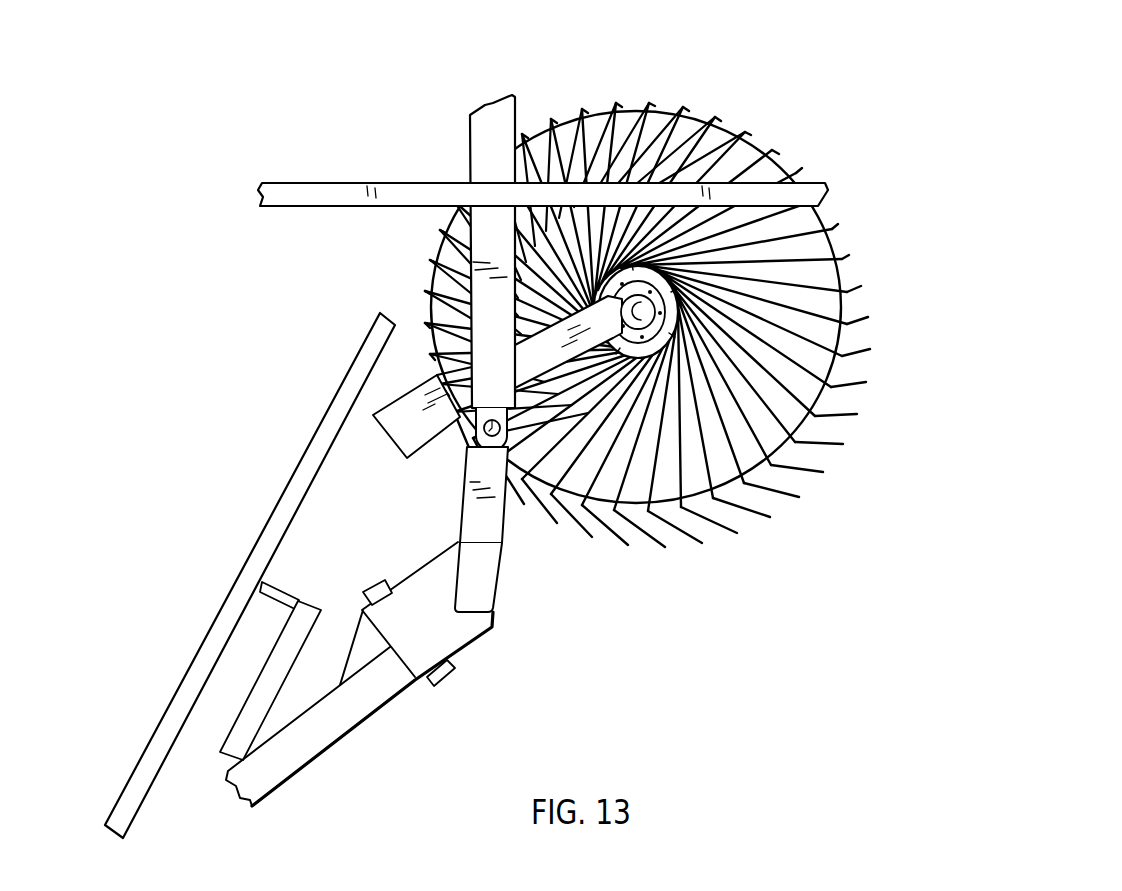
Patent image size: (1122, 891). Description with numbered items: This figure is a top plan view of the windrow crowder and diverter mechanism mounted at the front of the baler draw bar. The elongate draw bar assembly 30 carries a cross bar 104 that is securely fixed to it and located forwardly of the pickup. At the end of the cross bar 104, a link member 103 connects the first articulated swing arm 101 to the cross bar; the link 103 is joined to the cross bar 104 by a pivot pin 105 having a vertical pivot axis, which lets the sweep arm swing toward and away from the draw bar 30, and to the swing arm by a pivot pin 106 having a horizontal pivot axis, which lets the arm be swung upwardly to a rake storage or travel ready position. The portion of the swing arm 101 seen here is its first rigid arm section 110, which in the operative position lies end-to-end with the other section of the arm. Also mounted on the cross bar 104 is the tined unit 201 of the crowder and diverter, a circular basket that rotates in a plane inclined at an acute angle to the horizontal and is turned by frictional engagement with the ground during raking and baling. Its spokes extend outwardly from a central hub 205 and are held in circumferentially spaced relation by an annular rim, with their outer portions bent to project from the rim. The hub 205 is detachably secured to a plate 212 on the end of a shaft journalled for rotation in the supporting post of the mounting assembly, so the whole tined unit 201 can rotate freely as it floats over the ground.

The draw bar assembly 30 is at (362, 167).
The first articulated swing arm 101 is at (325, 778).
The link member 103 is at (472, 513).
The cross bar 104 is at (482, 124).
The pivot pin 105 is at (437, 373).
The pivot pin 106 is at (448, 678).
The first rigid arm section 110 is at (333, 723).
The tined unit 201 is at (647, 302).
The hub 205 is at (625, 265).
The plate 212 is at (688, 273).